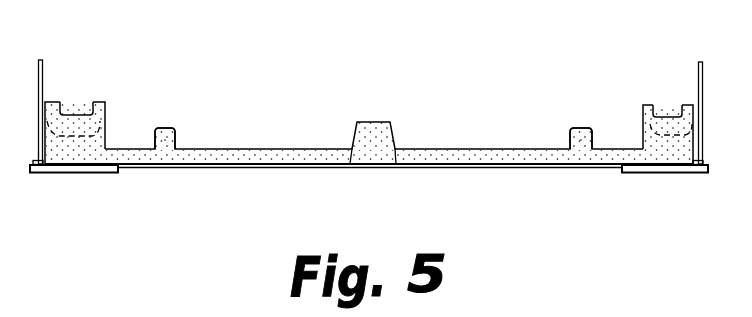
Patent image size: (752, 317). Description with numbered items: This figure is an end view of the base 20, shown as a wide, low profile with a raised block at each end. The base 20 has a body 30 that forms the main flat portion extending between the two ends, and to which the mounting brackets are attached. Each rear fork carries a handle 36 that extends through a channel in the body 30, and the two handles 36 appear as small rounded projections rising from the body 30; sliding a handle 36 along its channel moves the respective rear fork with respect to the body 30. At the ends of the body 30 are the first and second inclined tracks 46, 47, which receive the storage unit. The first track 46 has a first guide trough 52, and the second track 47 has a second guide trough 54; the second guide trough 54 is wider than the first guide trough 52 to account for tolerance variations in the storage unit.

The base 20 is at (230, 168).
The body 30 is at (188, 168).
The handle 36 is at (178, 135).
The first inclined track 46 is at (645, 117).
The second inclined track 47 is at (103, 117).
The first guide trough 52 is at (655, 108).
The second guide trough 54 is at (58, 108).